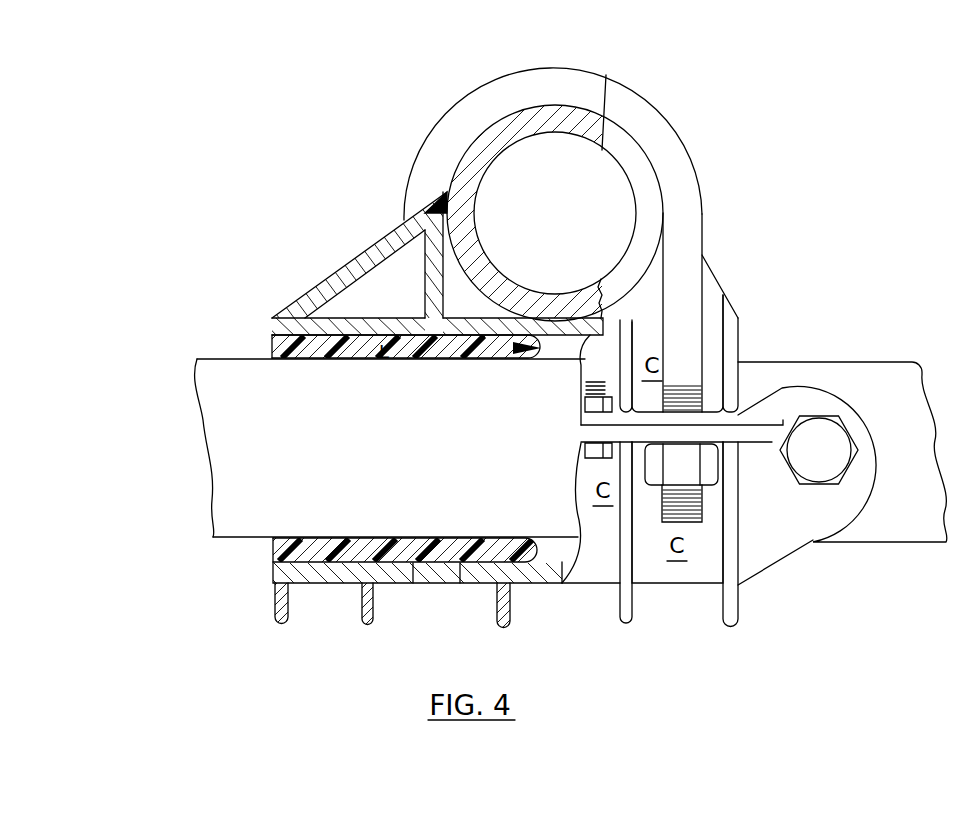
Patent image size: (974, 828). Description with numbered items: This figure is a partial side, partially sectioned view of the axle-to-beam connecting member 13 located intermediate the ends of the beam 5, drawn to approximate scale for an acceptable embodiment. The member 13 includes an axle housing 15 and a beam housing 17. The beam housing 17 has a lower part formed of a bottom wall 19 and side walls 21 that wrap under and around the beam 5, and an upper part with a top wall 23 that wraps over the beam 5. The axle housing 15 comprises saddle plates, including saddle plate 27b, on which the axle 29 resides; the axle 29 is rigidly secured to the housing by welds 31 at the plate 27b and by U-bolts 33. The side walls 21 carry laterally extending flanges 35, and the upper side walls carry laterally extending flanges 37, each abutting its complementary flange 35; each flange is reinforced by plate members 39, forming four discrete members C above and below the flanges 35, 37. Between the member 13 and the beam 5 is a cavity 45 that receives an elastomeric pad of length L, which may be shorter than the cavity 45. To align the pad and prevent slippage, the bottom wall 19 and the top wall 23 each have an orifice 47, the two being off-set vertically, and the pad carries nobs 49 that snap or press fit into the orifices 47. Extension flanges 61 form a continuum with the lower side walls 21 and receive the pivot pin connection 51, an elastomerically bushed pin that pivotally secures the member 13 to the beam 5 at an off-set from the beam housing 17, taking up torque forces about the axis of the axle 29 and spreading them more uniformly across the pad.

The beam 5 is at (213, 405).
The axle-to-beam connecting member 13 is at (755, 309).
The axle housing 15 is at (710, 303).
The beam housing 17 is at (510, 585).
The bottom wall 19 is at (347, 575).
The side walls 21 is at (580, 556).
The top wall 23 is at (447, 325).
The saddle plate 27b is at (433, 262).
The axle 29 is at (642, 170).
The welds 31 is at (430, 197).
The U-bolts 33 is at (685, 203).
The laterally extending flanges 35 is at (642, 437).
The laterally extending flanges 37 is at (733, 418).
The plate members 39 is at (732, 545).
The cavity 45 is at (558, 350).
The orifice 47 is at (350, 322).
The nobs 49 is at (398, 333).
The pivot pin connection 51 is at (852, 440).
The extension flanges 61 is at (780, 505).